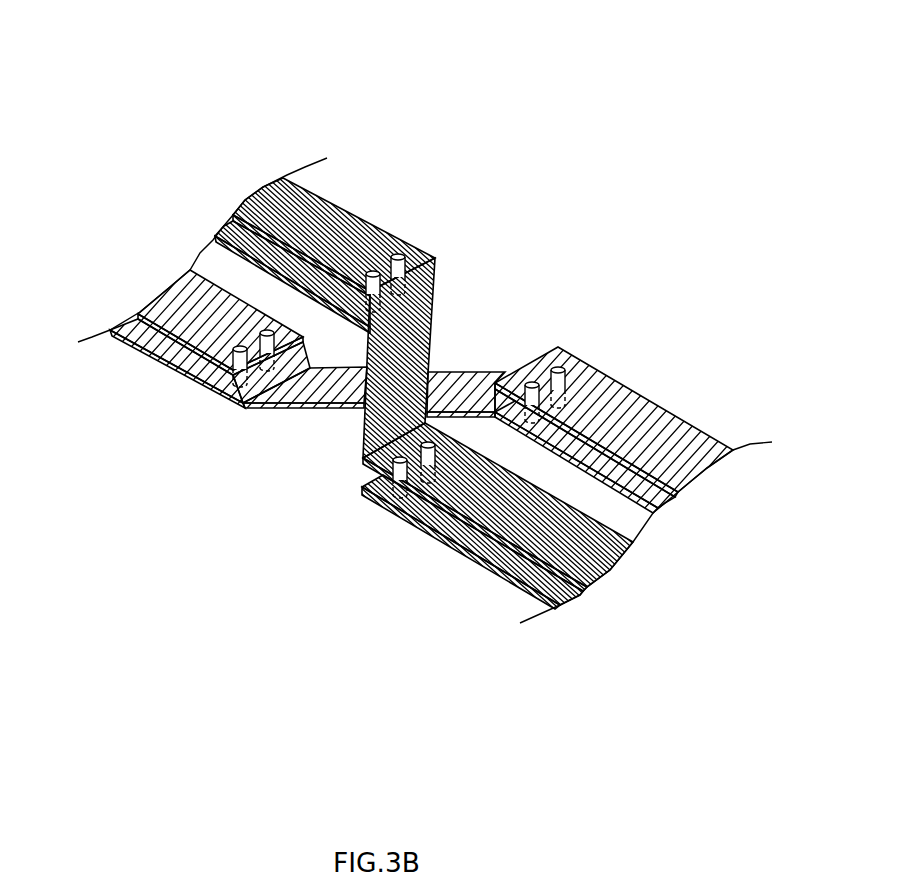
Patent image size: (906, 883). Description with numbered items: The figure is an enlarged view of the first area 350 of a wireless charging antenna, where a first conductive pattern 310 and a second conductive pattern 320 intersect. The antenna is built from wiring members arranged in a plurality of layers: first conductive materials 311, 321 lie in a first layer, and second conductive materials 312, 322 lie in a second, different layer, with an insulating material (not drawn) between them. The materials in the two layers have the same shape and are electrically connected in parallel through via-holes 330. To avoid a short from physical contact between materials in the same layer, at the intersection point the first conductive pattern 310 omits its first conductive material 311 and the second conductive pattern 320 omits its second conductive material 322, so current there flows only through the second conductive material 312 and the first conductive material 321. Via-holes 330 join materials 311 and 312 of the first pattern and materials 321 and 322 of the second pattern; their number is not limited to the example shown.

The first area 350 is at (445, 88).
The first conductive pattern 310 is at (129, 577).
The first conductive material 311 is at (178, 300).
The second conductive material 312 is at (133, 327).
The second conductive pattern 320 is at (129, 650).
The first conductive material 321 is at (275, 198).
The second conductive material 322 is at (232, 230).
The via-holes 330 is at (396, 256).